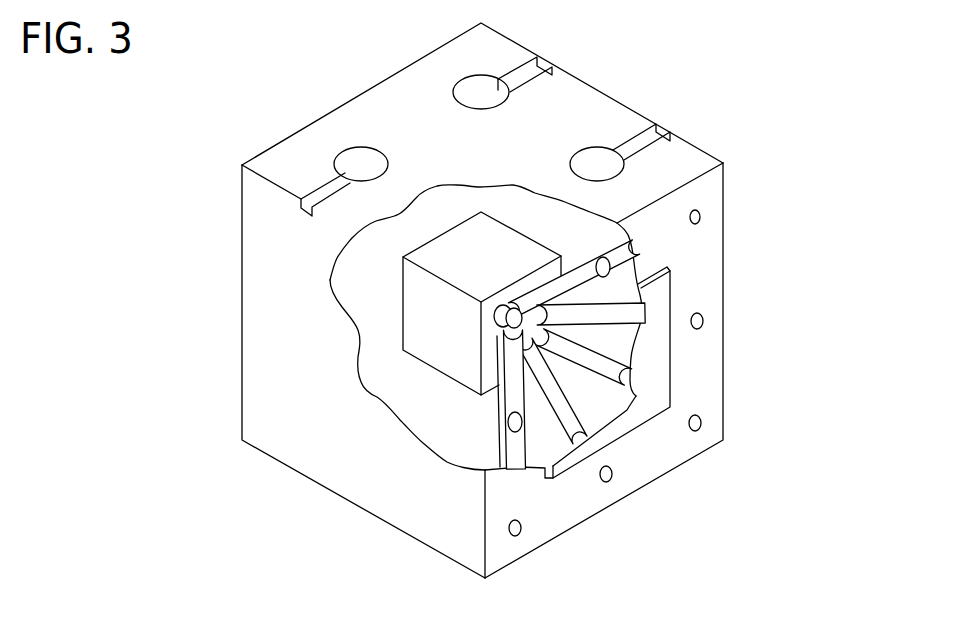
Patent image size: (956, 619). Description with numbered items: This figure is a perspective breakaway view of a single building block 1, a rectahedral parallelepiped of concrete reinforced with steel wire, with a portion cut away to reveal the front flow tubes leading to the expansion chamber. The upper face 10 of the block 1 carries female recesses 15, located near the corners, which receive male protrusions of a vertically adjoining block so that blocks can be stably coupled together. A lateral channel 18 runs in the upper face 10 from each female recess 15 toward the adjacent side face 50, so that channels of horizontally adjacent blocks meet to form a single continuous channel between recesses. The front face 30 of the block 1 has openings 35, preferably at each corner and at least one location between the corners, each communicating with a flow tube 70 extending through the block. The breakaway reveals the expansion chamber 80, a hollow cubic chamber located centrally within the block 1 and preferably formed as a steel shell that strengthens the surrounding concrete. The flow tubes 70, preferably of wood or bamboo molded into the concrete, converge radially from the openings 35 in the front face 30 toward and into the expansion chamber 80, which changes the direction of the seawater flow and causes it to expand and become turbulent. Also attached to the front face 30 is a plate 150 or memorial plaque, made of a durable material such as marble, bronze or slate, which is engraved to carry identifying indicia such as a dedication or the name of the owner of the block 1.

The block 1 is at (742, 92).
The upper face 10 is at (297, 148).
The female recess 15 is at (484, 89).
The lateral channel 18 is at (528, 68).
The front face 30 is at (720, 384).
The opening 35 is at (700, 218).
The side face 50 is at (258, 414).
The flow tube 70 is at (505, 444).
The expansion chamber 80 is at (420, 293).
The plate 150 is at (650, 410).